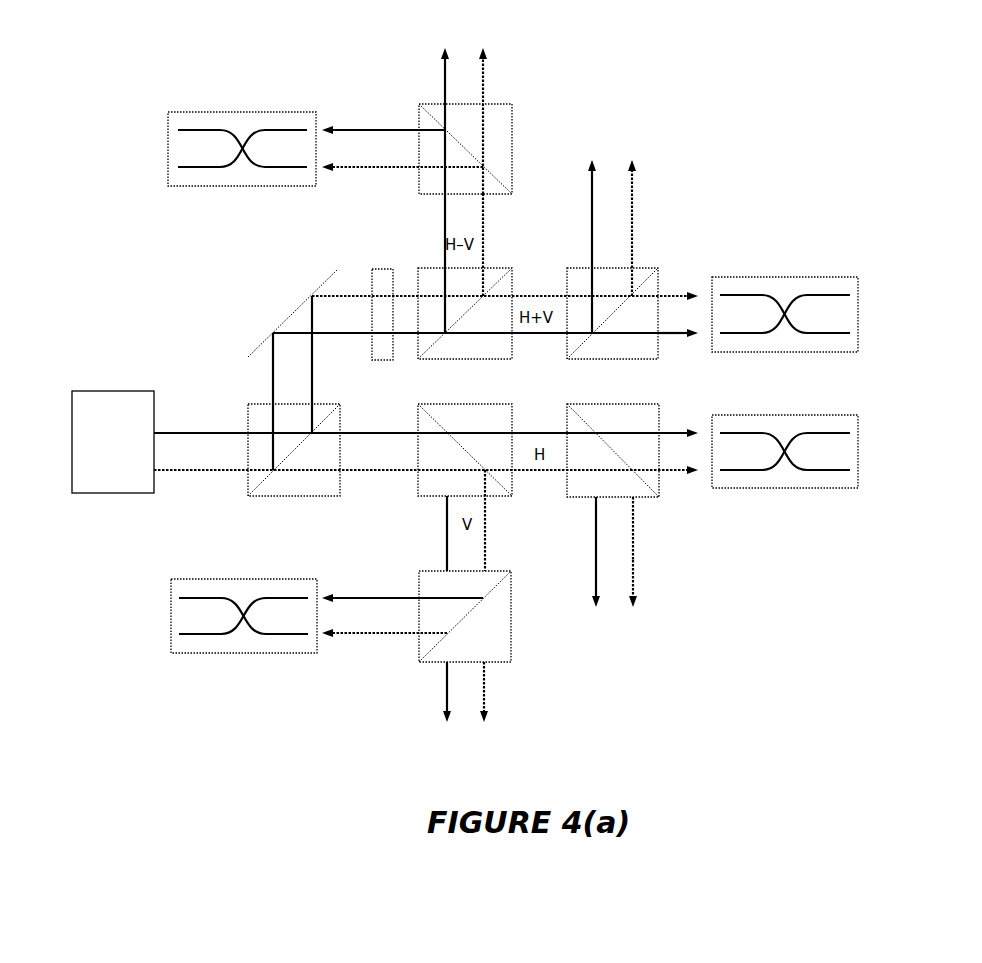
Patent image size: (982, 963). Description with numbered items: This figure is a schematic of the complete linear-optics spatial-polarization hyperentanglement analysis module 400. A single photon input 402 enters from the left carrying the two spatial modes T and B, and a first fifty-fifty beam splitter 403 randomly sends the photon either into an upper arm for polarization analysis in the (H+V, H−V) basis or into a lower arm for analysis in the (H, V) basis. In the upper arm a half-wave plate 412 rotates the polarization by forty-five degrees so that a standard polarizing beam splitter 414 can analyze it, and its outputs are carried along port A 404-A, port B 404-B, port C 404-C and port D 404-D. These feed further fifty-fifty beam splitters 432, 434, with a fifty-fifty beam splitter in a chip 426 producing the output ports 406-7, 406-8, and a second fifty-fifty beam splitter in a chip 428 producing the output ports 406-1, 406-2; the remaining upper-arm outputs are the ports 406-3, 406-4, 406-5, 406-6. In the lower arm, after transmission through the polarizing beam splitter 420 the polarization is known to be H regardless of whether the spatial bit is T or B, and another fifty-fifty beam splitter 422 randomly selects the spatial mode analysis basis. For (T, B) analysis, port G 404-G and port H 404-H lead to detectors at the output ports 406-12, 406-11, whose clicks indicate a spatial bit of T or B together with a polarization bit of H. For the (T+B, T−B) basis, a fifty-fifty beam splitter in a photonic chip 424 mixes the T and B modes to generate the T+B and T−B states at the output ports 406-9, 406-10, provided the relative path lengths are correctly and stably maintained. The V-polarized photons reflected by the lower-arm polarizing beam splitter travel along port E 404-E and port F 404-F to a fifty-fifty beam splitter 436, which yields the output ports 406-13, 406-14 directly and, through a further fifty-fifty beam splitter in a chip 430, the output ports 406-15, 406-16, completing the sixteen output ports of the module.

The analyzer module 400 is at (803, 98).
The single photon input 402 is at (105, 389).
The first 50/50 beam splitter 403 is at (245, 482).
The half-wave plate 412 is at (372, 280).
The polarizing beam splitter 414 is at (512, 280).
The polarizing beam splitter 420 is at (418, 423).
The 50/50 beam splitter 422 is at (568, 422).
The 50/50 beam splitter in a photonic chip 424 is at (805, 493).
The 50/50 beam splitter in a chip 426 is at (795, 280).
The 50/50 beam splitter in a chip 428 is at (257, 108).
The 50/50 beam splitter in a chip 430 is at (275, 573).
The 50/50 beam splitter 432 is at (662, 277).
The 50/50 beam splitter 434 is at (420, 118).
The 50/50 beam splitter 436 is at (418, 643).
The port A 404-A is at (438, 219).
The port B 404-B is at (490, 208).
The port C 404-C is at (635, 220).
The port D 404-D is at (675, 333).
The port E 404-E is at (446, 543).
The port F 404-F is at (488, 553).
The port G 404-G is at (592, 542).
The port H 404-H is at (637, 552).
The port 1 406-1 is at (165, 118).
The port 2 406-2 is at (165, 179).
The port 3 406-3 is at (442, 53).
The port 4 406-4 is at (488, 57).
The port 5 406-5 is at (588, 177).
The port 6 406-6 is at (635, 182).
The port 7 406-7 is at (858, 293).
The port 8 406-8 is at (860, 347).
The port 9 406-9 is at (857, 435).
The port 10 406-10 is at (857, 475).
The port 11 406-11 is at (642, 607).
The port 12 406-12 is at (593, 600).
The port 13 406-13 is at (490, 708).
The port 14 406-14 is at (443, 708).
The port 15 406-15 is at (163, 645).
The port 16 406-16 is at (170, 580).